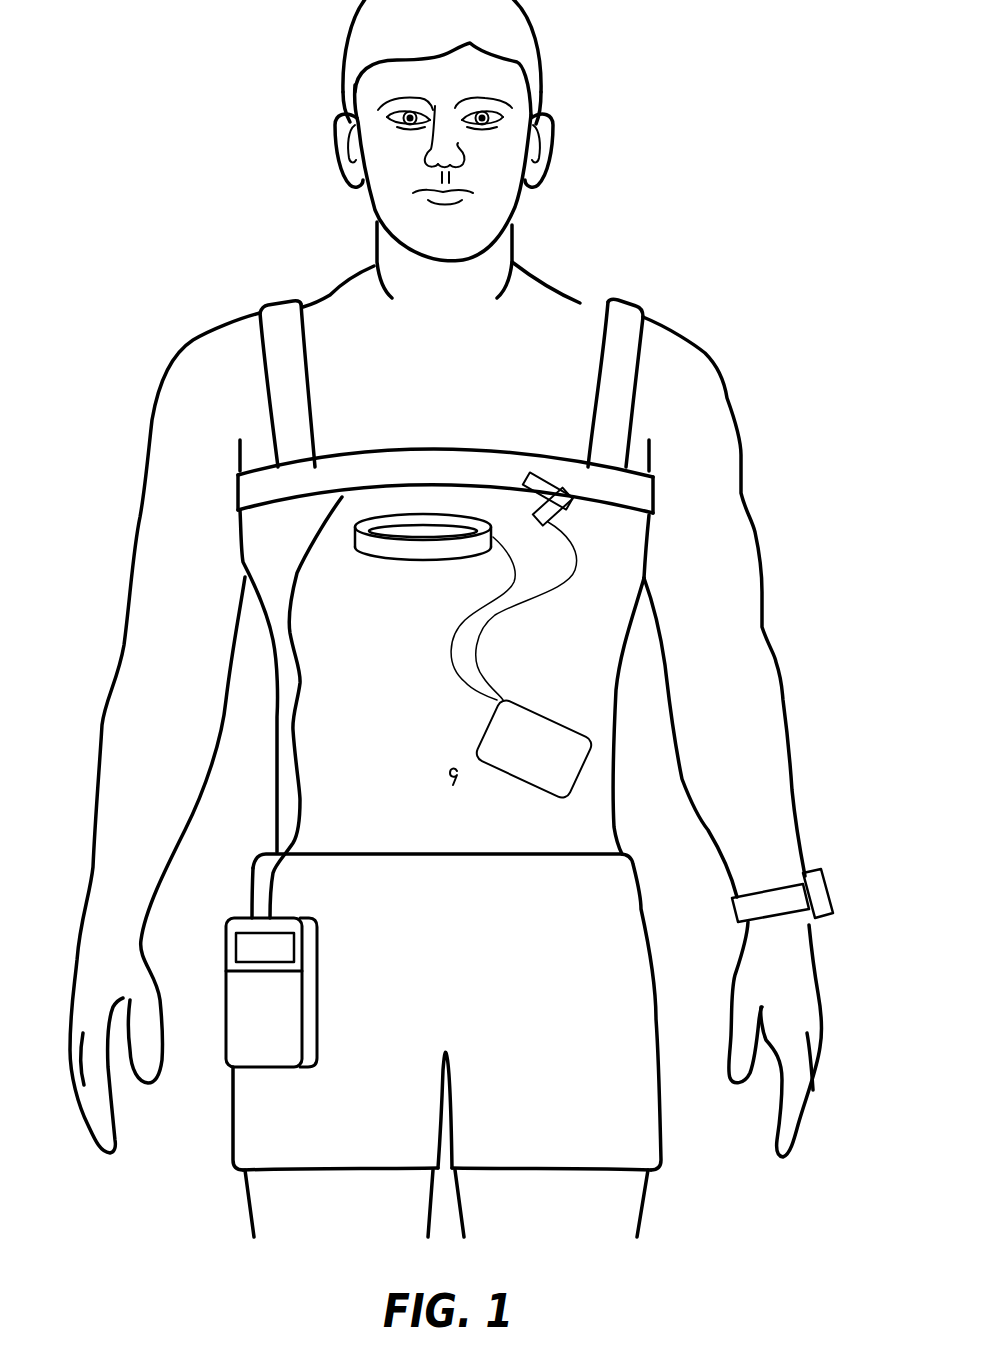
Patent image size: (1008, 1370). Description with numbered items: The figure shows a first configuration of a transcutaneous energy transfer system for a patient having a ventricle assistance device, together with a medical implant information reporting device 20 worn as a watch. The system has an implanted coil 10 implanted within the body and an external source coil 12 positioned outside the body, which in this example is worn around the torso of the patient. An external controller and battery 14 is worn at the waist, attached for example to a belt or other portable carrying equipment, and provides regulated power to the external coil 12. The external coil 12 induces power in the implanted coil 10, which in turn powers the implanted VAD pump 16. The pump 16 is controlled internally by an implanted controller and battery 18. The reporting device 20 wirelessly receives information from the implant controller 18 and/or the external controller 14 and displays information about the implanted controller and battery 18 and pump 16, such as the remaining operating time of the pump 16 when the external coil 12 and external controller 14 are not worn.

The implanted coil 10 is at (413, 552).
The external source coil 12 is at (373, 471).
The external controller and battery 14 is at (252, 1015).
The implanted VAD pump 16 is at (549, 470).
The implanted controller and battery 18 is at (547, 752).
The medical implant information reporting device 20 is at (830, 893).